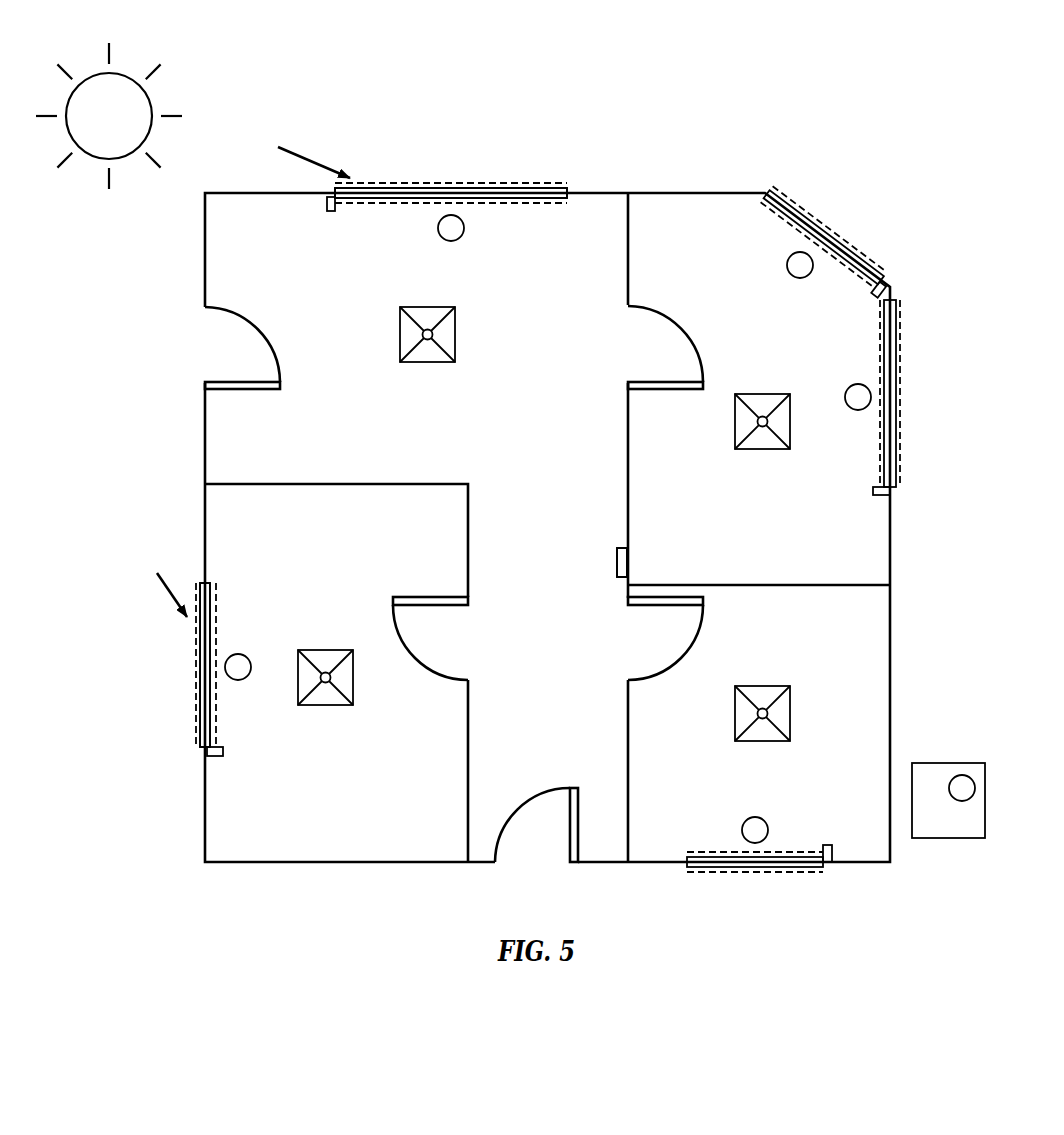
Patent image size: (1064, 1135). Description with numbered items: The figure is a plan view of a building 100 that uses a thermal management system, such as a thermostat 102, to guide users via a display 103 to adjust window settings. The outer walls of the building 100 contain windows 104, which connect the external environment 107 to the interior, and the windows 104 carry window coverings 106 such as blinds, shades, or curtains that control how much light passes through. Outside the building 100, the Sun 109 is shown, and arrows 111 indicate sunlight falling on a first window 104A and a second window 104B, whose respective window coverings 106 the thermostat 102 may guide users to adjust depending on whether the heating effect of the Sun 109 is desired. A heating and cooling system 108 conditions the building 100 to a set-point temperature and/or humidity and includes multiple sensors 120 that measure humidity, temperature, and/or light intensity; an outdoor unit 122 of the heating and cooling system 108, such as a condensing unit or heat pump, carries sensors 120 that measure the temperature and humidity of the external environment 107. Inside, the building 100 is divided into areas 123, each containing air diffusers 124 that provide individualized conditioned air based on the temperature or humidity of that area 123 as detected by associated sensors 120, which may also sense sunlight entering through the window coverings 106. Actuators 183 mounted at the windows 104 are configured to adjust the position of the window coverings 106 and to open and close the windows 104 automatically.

The building 100 is at (613, 174).
The thermostat 102 is at (616, 565).
The display 103 is at (606, 549).
The windows 104 is at (450, 186).
The first window 104A is at (387, 186).
The second window 104B is at (199, 718).
The window coverings 106 is at (533, 184).
The external environment 107 is at (162, 475).
The heating and cooling system 108 is at (593, 126).
The Sun 109 is at (177, 82).
The arrows 111 is at (316, 160).
The sensors 120 is at (457, 241).
The outdoor unit 122 is at (950, 763).
The areas 123 is at (444, 403).
The air diffusers 124 is at (456, 309).
The actuators 183 is at (334, 212).